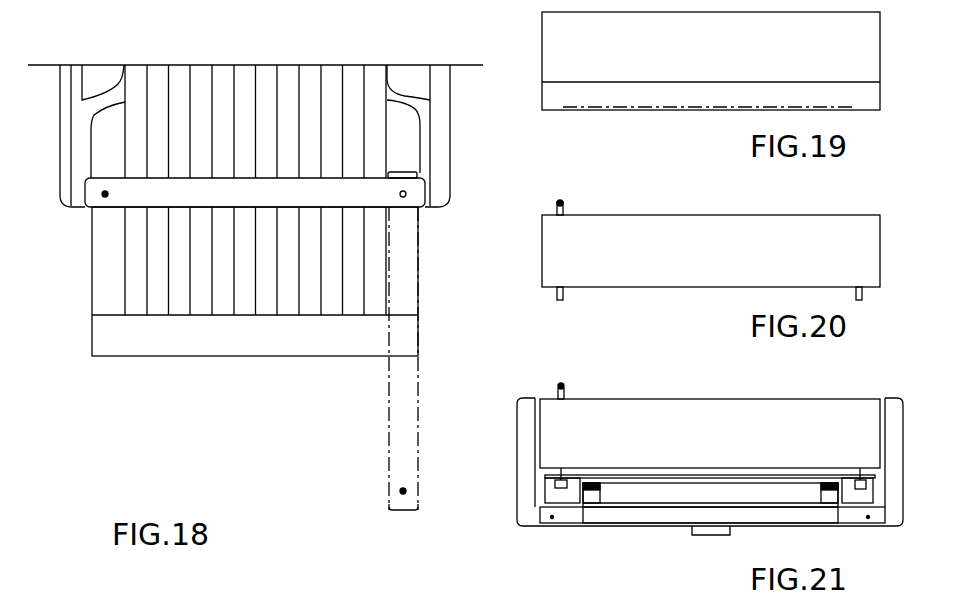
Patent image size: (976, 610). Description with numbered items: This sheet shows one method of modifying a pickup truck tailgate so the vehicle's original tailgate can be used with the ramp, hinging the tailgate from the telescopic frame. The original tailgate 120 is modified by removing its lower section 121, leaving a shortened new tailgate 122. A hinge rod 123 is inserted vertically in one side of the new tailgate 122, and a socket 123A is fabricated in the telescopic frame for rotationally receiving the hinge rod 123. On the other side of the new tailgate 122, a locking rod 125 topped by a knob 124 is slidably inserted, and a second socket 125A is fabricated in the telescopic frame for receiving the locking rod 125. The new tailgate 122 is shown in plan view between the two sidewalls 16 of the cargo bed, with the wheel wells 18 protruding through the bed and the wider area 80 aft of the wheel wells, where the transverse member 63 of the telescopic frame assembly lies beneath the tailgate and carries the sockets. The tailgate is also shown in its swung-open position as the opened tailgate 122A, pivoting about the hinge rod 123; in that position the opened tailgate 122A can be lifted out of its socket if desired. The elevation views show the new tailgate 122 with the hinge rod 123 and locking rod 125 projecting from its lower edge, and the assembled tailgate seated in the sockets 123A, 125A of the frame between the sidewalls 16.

In FIG. 18, the sidewall 16 is at (440, 195).
In FIG. 21, the sidewall 16 is at (528, 497).
In FIG. 18, the wheel well 18 is at (423, 78).
In FIG. 18, the transverse member 63 is at (277, 345).
In FIG. 21, the transverse member 63 is at (702, 477).
In FIG. 18, the area aft of the wheel wells 80 is at (108, 307).
In FIG. 21, the area aft of the wheel wells 80 is at (572, 497).
In FIG. 19, the original tailgate 120 is at (726, 64).
In FIG. 19, the lower section 121 is at (726, 107).
In FIG. 18, the new tailgate 122 is at (263, 204).
In FIG. 20, the new tailgate 122 is at (726, 262).
In FIG. 21, the new tailgate 122 is at (726, 445).
In FIG. 18, the opened tailgate 122A is at (403, 435).
In FIG. 18, the hinge rod 123 is at (403, 194).
In FIG. 20, the hinge rod 123 is at (857, 287).
In FIG. 21, the socket 123A is at (862, 476).
In FIG. 18, the knob 124 is at (105, 194).
In FIG. 20, the knob 124 is at (563, 205).
In FIG. 20, the locking rod 125 is at (560, 300).
In FIG. 21, the socket 125A is at (562, 480).